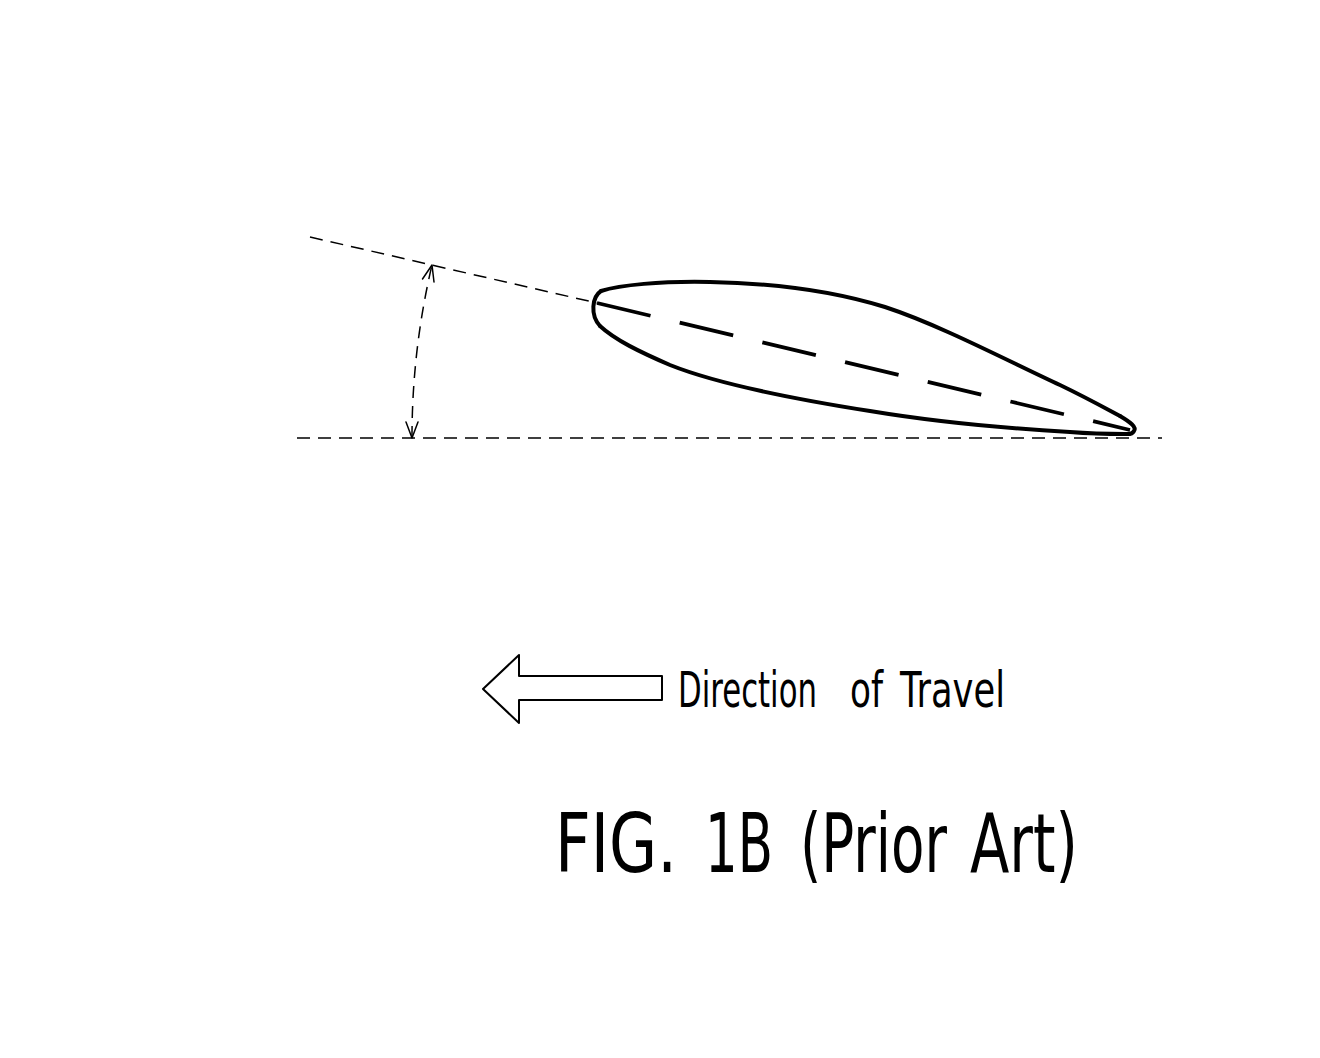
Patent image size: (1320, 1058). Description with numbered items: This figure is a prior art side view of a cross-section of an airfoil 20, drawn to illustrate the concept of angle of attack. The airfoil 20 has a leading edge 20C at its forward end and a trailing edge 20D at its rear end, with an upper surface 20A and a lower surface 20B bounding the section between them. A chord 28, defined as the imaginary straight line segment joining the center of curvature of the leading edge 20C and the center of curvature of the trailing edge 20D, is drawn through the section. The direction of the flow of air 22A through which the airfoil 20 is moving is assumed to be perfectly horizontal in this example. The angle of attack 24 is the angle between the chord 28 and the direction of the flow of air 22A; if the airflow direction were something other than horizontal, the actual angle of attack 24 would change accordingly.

The airfoil 20 is at (866, 335).
The upper surface of hydrofoil 20A is at (922, 318).
The lower surface of hydrofoil 20B is at (827, 408).
The leading edge 20C is at (592, 298).
The trailing edge 20D is at (1138, 439).
The direction of the flow of air 22A is at (305, 440).
The angle of attack 24 is at (406, 364).
The chord 28 is at (893, 372).